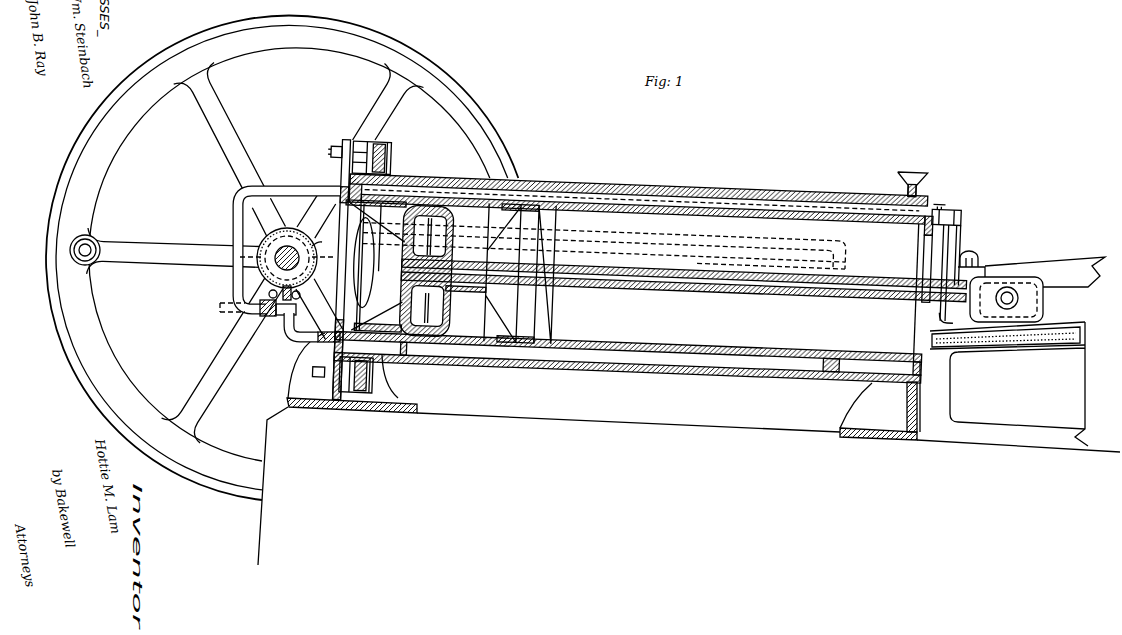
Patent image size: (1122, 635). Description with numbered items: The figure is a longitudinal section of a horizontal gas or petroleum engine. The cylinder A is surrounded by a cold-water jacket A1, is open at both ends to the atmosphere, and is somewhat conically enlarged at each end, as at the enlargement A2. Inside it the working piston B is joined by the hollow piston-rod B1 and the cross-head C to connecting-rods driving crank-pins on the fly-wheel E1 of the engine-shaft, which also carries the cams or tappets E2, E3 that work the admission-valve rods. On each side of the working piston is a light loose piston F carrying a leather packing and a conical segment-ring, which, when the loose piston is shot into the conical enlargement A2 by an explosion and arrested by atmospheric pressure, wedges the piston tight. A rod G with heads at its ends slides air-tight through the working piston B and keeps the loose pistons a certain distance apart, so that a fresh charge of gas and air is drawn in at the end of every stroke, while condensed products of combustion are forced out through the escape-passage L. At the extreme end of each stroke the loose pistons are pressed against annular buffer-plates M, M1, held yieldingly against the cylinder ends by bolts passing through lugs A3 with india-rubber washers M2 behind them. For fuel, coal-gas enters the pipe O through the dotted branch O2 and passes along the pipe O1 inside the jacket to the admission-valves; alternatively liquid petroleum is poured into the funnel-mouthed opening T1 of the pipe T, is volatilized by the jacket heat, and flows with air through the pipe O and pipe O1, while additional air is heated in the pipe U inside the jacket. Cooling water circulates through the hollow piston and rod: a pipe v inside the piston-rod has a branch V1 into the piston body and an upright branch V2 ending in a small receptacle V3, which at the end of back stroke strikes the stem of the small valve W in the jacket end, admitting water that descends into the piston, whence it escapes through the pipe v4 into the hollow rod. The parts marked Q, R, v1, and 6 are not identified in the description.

The cylinder A is at (670, 331).
The cold-water jacket A1 is at (638, 192).
The conical enlargement A2 is at (628, 340).
The lugs A3 is at (342, 374).
The working piston B is at (459, 242).
The piston-rod B1 is at (684, 273).
The cross-head C is at (1031, 286).
The fly-wheel E1 is at (306, 258).
The cam or tappet E2 is at (323, 248).
The cam or tappet E3 is at (272, 292).
The loose piston F is at (373, 266).
The rod G is at (433, 271).
The escape-passage L is at (836, 362).
The annular buffer-plate M is at (342, 269).
The annular buffer-plate M1 is at (689, 449).
The india-rubber washers M2 is at (369, 155).
The pipe O is at (280, 245).
The pipe O1 is at (303, 327).
The branch O2 is at (604, 246).
The governor pin Q is at (303, 295).
The shaft R is at (287, 258).
The pipe T is at (645, 271).
The funnel-mouthed opening T1 is at (642, 212).
The pipe U is at (772, 244).
The branch V1 is at (920, 158).
The upright branch V2 is at (954, 273).
The receptacle V3 is at (954, 246).
The pipe v is at (434, 237).
The valve port (v') v1 is at (433, 308).
The pipe v4 is at (953, 321).
The valve W is at (936, 200).
The guide bar 6 is at (1078, 335).